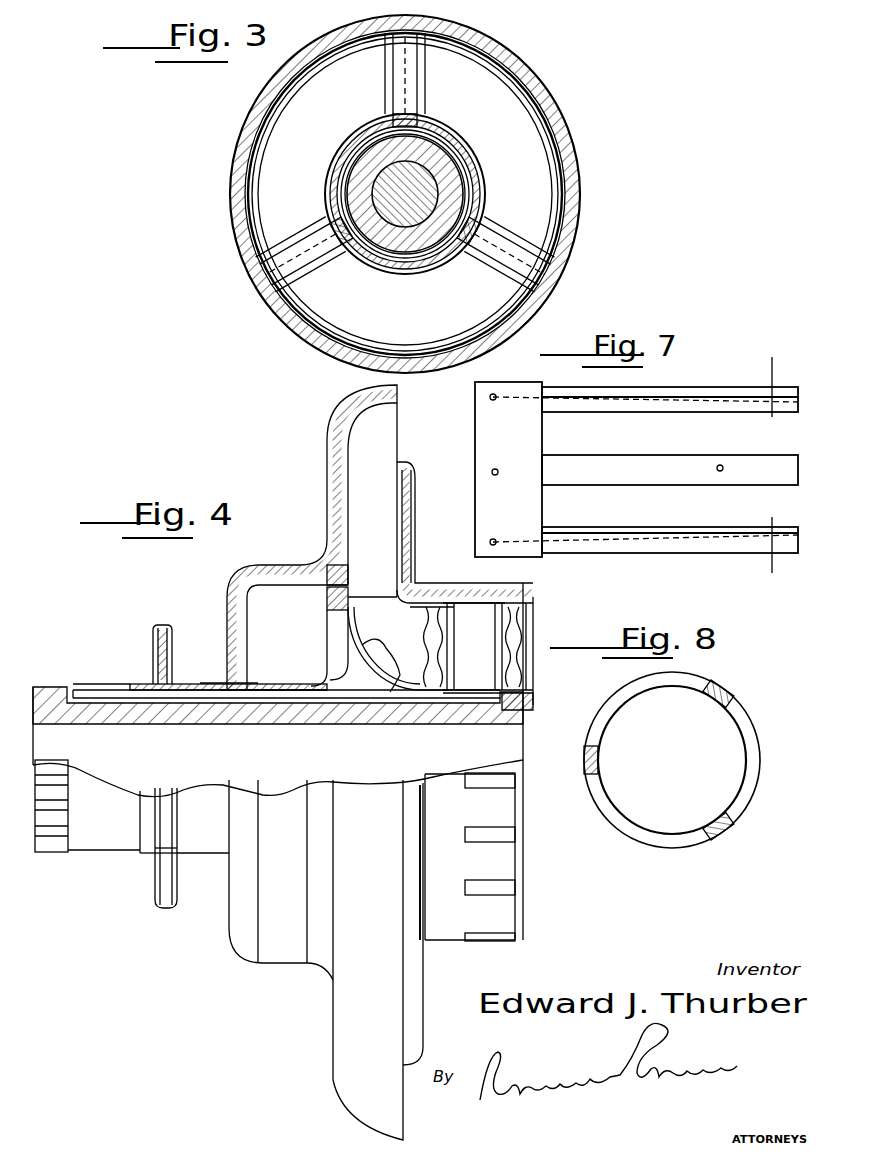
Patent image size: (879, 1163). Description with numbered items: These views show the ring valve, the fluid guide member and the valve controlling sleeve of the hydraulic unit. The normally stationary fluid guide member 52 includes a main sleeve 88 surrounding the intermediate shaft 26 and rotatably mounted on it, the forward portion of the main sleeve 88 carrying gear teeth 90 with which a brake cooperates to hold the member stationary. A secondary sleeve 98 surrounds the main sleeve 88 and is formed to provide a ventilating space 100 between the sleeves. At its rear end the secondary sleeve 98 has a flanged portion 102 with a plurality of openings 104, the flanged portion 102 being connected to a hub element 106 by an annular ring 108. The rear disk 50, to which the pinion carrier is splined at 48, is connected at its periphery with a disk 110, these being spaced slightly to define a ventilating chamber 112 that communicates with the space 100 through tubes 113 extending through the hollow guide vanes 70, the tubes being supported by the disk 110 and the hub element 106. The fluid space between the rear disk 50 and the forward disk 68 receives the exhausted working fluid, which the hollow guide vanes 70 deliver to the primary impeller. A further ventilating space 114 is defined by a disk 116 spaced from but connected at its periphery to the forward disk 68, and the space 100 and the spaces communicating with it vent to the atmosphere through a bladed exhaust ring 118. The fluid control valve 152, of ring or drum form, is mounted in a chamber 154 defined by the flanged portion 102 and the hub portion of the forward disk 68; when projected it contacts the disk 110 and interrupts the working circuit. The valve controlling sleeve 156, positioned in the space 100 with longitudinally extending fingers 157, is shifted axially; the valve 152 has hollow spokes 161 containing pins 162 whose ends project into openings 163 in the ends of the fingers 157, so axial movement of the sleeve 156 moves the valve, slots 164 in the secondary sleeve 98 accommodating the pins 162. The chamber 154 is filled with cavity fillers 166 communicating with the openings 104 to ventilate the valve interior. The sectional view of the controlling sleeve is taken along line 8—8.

In FIG. 3, the intermediate shaft 26 is at (441, 189).
In FIG. 4, the spline 48 is at (516, 590).
In FIG. 4, the rear disk 50 is at (427, 522).
In FIG. 4, the fluid guide member 52 is at (121, 671).
In FIG. 3, the forward disk 68 is at (405, 194).
In FIG. 4, the forward disk 68 is at (349, 461).
In FIG. 4, the hollow guide vanes 70 is at (404, 636).
In FIG. 3, the main sleeve 88 is at (429, 194).
In FIG. 4, the main sleeve 88 is at (208, 715).
In FIG. 4, the gear teeth 90 is at (56, 853).
In FIG. 3, the secondary sleeve 98 is at (405, 187).
In FIG. 4, the secondary sleeve 98 is at (141, 691).
In FIG. 3, the ventilating space 100 is at (423, 187).
In FIG. 4, the ventilating space 100 is at (243, 699).
In FIG. 4, the flanged portion 102 is at (340, 686).
In FIG. 4, the openings 104 is at (330, 630).
In FIG. 4, the hub element 106 is at (390, 680).
In FIG. 4, the annular ring 108 is at (326, 597).
In FIG. 4, the disk 110 is at (400, 538).
In FIG. 4, the ventilating chamber 112 is at (409, 558).
In FIG. 4, the tubes 113 is at (482, 715).
In FIG. 4, the ventilating space 114 is at (338, 490).
In FIG. 4, the disk 116 is at (329, 467).
In FIG. 4, the bladed exhaust ring 118 is at (175, 646).
In FIG. 3, the fluid control valve 152 is at (422, 194).
In FIG. 3, the chamber 154 is at (405, 215).
In FIG. 4, the chamber 154 is at (289, 665).
In FIG. 7, the valve controlling sleeve 156 is at (527, 442).
In FIG. 3, the fingers 157 is at (405, 176).
In FIG. 7, the fingers 157 is at (642, 410).
In FIG. 8, the fingers 157 is at (726, 692).
In FIG. 3, the hollow spokes 161 is at (405, 163).
In FIG. 3, the pins 162 is at (405, 166).
In FIG. 7, the openings 163 is at (717, 398).
In FIG. 8, the openings 163 is at (720, 682).
In FIG. 4, the slots 164 is at (294, 687).
In FIG. 3, the cavity fillers 166 is at (430, 194).
In FIG. 7, the section line 8— 8 is at (770, 363).